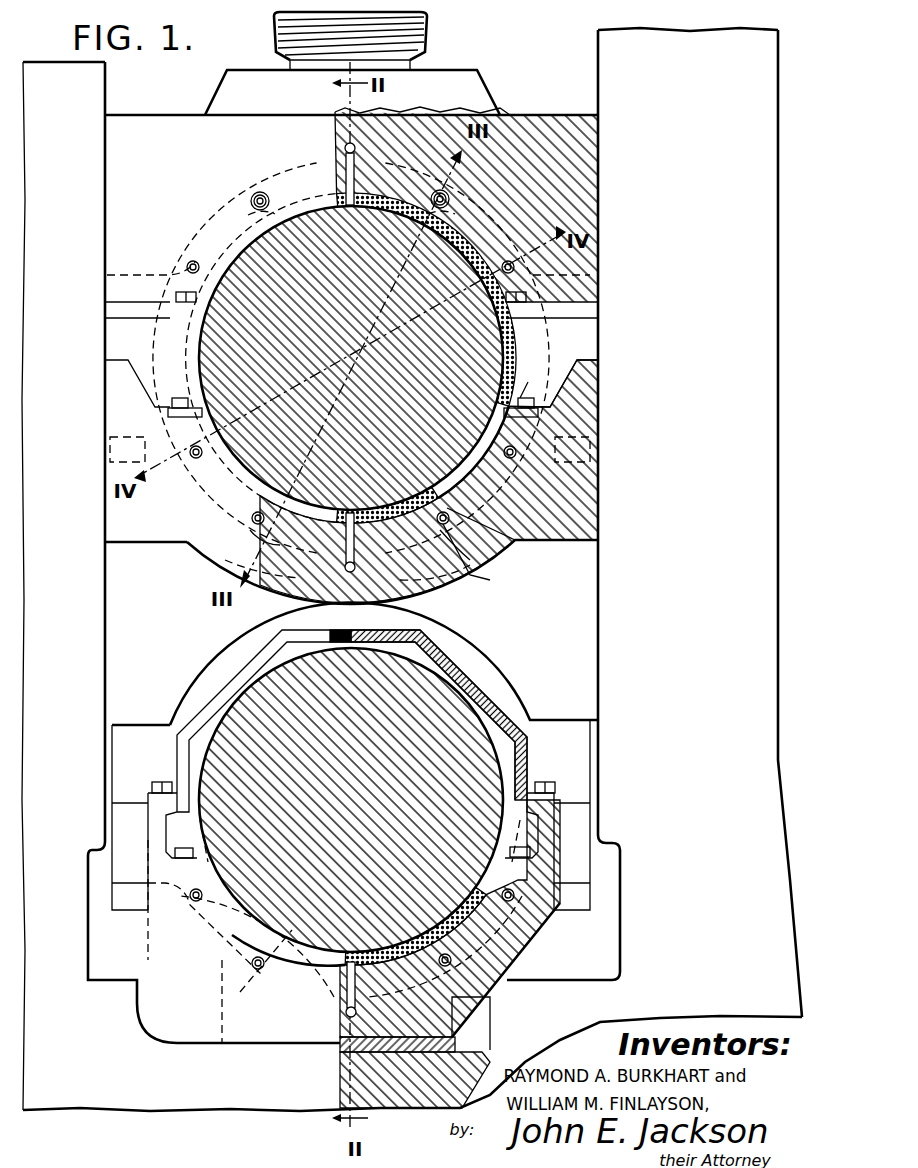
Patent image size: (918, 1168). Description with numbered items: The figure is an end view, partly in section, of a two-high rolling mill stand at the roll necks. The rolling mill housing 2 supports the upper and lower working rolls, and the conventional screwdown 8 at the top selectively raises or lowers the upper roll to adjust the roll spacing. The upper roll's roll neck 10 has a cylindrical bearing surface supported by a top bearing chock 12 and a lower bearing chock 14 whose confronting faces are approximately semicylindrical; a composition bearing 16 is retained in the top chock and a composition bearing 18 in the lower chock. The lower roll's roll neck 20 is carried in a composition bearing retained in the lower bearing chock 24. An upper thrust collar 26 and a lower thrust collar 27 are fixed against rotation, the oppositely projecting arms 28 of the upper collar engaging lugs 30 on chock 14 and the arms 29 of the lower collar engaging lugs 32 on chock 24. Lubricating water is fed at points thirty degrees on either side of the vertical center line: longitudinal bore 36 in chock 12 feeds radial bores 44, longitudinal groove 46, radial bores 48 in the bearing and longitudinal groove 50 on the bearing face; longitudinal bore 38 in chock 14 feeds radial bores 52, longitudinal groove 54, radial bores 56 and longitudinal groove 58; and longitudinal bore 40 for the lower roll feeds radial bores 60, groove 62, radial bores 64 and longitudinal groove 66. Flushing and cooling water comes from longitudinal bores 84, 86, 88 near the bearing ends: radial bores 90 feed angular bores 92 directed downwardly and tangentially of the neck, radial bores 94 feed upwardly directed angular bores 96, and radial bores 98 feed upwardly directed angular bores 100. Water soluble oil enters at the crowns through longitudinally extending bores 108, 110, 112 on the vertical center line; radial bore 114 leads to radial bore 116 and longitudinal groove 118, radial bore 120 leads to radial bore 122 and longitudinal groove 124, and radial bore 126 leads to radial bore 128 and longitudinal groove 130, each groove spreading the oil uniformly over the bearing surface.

The rolling mill housing 2 is at (90, 92).
The screwdown 8 is at (418, 40).
The roll neck 10 is at (366, 364).
The top bearing chock 12 is at (540, 118).
The lower bearing chock 14 is at (598, 518).
The composition bearing 16 is at (447, 232).
The composition bearing 18 is at (505, 545).
The roll neck 20 is at (344, 787).
The lower bearing chock 24 is at (548, 938).
The upper thrust collar 26 is at (205, 218).
The lower thrust collar 27 is at (333, 941).
The arms 28 is at (125, 325).
The arms 29 is at (124, 772).
The lugs 30 is at (110, 450).
The lugs 32 is at (120, 888).
The longitudinal bore 36 is at (268, 200).
The longitudinal bore 38 is at (235, 555).
The longitudinal bore 40 is at (540, 935).
The radial bores 44 is at (262, 194).
The longitudinal groove 46 is at (250, 200).
The radial bores 48 is at (302, 232).
The longitudinal groove 50 is at (342, 213).
The radial bores 52 is at (250, 518).
The longitudinal groove 54 is at (466, 582).
The radial bores 56 is at (262, 505).
The longitudinal groove 58 is at (345, 512).
The radial bores 60 is at (332, 955).
The groove 62 is at (250, 963).
The radial bores 64 is at (341, 940).
The longitudinal groove 66 is at (302, 940).
The longitudinal bores 84 is at (186, 265).
The longitudinal bores 86 is at (196, 460).
The longitudinal bores 88 is at (190, 900).
The radial bores 90 is at (540, 242).
The angular bores 92 is at (215, 285).
The radial bores 94 is at (535, 385).
The angular bores 96 is at (200, 405).
The radial bores 98 is at (560, 840).
The angular bores 100 is at (208, 880).
The longitudinally extending bore 108 is at (353, 153).
The longitudinally extending bore 110 is at (303, 600).
The longitudinally extending bore 112 is at (340, 1022).
The radial bore 114 is at (370, 185).
The radial bore 116 is at (358, 215).
The longitudinal groove 118 is at (346, 215).
The radial bore 120 is at (408, 576).
The radial bore 122 is at (346, 512).
The longitudinal groove 124 is at (356, 512).
The radial bore 126 is at (360, 1046).
The radial bore 128 is at (302, 985).
The longitudinal groove 130 is at (352, 950).